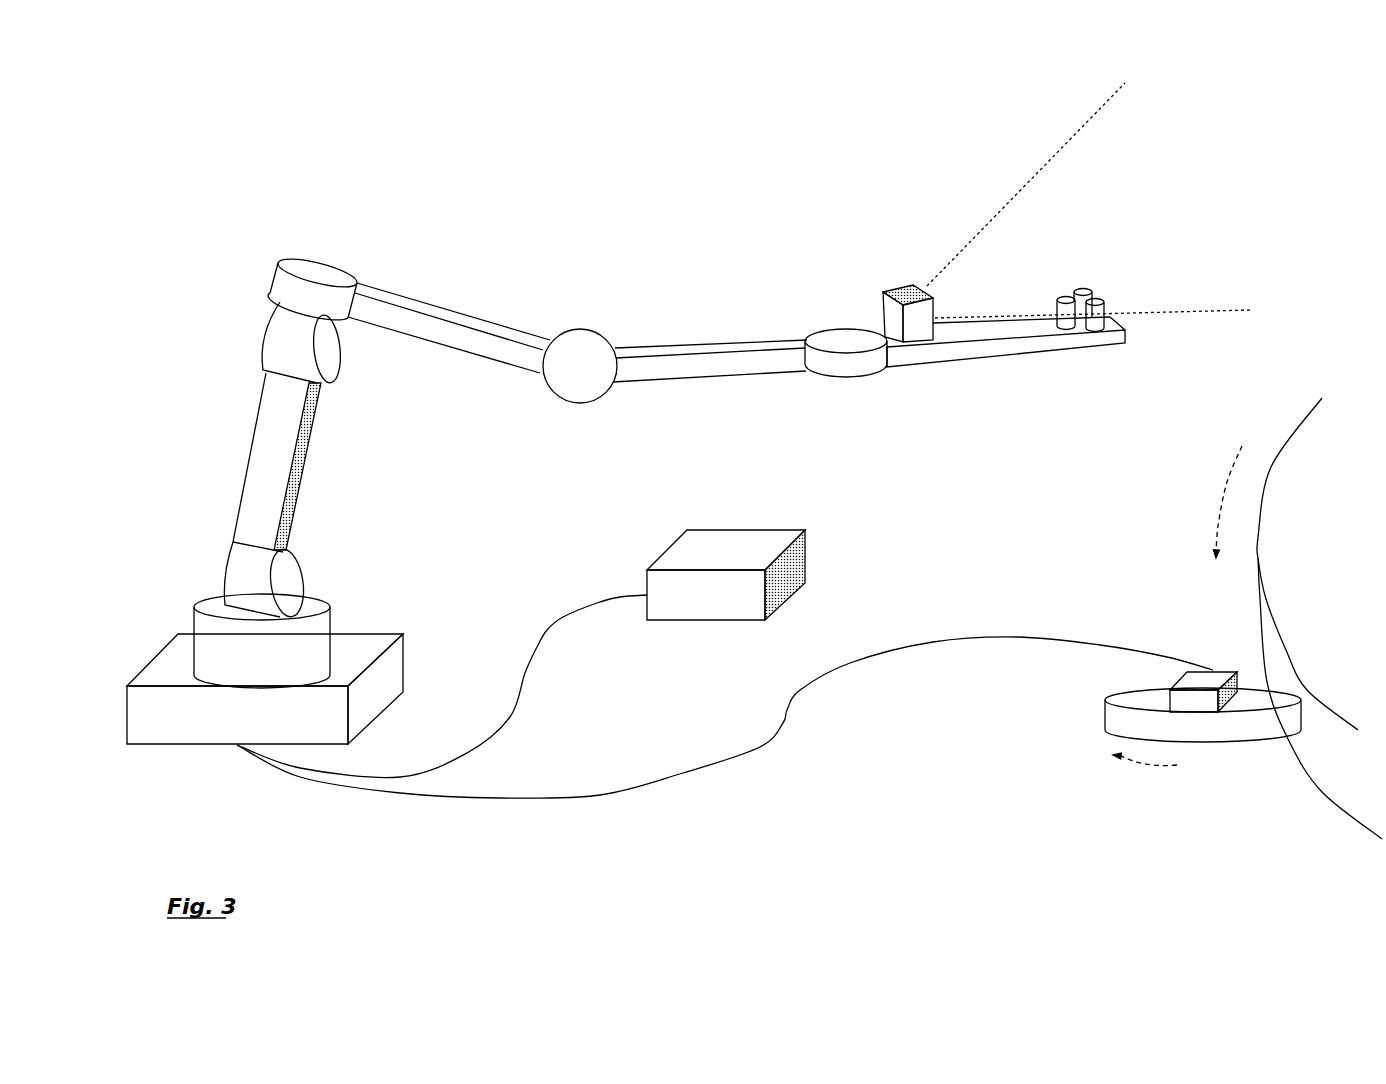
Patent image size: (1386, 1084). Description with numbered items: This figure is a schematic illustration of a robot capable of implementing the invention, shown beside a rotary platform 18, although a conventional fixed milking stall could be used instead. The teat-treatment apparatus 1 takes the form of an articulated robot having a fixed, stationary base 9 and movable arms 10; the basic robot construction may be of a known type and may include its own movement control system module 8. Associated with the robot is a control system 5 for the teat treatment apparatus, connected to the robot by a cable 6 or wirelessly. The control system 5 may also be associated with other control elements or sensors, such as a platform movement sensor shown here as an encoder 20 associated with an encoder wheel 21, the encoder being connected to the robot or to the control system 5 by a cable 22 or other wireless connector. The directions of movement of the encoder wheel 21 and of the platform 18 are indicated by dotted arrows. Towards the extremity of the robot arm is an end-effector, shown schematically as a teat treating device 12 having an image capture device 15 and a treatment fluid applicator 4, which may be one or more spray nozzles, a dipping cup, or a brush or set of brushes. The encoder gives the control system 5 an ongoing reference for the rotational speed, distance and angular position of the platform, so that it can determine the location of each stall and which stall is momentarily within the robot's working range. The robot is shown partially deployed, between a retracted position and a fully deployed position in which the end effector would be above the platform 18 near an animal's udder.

The teat-treatment apparatus 1 is at (605, 186).
The treatment fluid applicator 4 is at (1103, 291).
The control system 5 is at (754, 522).
The cable 6 is at (533, 631).
The movement control system module 8 is at (340, 630).
The base 9 is at (122, 700).
The movable arms 10 is at (706, 331).
The teat treating device 12 is at (1011, 367).
The image capture device 15 is at (894, 277).
The rotary platform 18 is at (1267, 558).
The encoder 20 is at (1155, 696).
The encoder wheel 21 is at (1225, 757).
The cable 22 is at (780, 756).